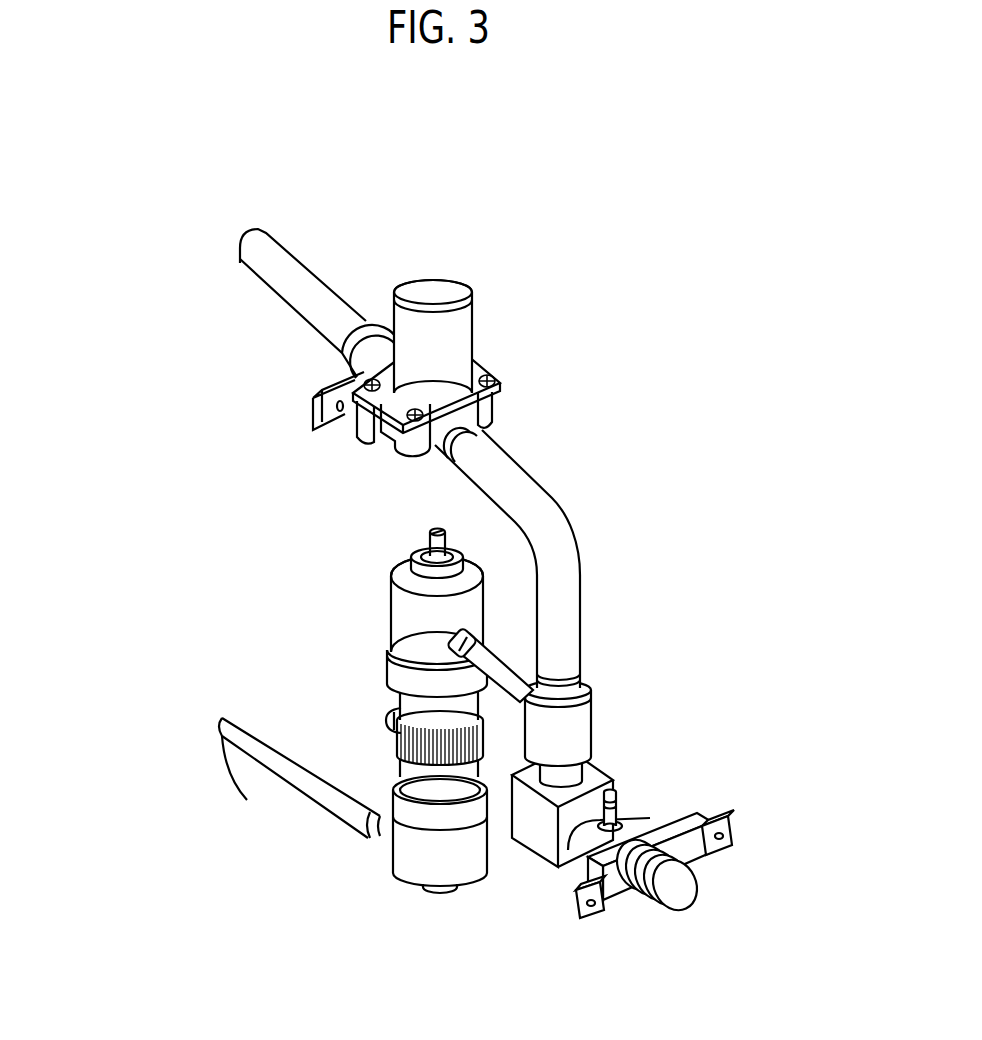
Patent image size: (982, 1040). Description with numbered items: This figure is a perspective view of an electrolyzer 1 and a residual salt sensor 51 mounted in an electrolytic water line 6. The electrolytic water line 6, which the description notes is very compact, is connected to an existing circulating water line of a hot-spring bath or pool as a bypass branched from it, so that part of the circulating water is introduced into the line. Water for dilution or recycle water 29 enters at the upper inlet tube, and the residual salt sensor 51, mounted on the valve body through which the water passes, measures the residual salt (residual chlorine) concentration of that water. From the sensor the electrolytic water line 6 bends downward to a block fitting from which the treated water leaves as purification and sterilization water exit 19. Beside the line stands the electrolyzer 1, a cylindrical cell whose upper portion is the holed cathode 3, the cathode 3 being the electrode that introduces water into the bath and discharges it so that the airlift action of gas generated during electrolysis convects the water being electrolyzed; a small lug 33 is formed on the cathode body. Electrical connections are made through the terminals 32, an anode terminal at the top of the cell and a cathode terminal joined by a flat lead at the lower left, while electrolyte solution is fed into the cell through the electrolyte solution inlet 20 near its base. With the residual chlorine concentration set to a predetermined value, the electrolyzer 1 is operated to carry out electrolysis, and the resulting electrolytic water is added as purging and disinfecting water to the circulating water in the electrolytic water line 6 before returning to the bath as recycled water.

The water for dilution or recycle water inlet 29 is at (224, 212).
The residual salt sensor 51 is at (474, 313).
The terminal (anode terminal / cathode terminal) 32 is at (428, 528).
The holed cathode 3 is at (413, 703).
The cathode lug 33 is at (396, 722).
The electrolyzer 1 is at (413, 768).
The electrolyte solution inlet 20 is at (365, 836).
The electrolytic water line 6 is at (633, 818).
The purification sterilization water exit 19 is at (672, 883).